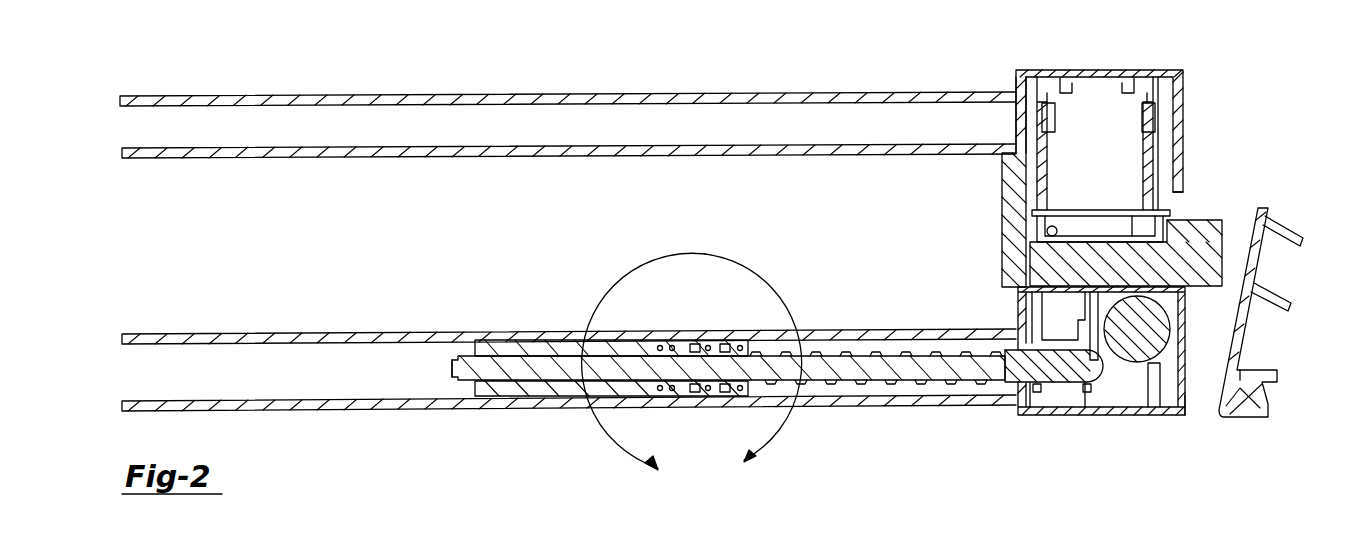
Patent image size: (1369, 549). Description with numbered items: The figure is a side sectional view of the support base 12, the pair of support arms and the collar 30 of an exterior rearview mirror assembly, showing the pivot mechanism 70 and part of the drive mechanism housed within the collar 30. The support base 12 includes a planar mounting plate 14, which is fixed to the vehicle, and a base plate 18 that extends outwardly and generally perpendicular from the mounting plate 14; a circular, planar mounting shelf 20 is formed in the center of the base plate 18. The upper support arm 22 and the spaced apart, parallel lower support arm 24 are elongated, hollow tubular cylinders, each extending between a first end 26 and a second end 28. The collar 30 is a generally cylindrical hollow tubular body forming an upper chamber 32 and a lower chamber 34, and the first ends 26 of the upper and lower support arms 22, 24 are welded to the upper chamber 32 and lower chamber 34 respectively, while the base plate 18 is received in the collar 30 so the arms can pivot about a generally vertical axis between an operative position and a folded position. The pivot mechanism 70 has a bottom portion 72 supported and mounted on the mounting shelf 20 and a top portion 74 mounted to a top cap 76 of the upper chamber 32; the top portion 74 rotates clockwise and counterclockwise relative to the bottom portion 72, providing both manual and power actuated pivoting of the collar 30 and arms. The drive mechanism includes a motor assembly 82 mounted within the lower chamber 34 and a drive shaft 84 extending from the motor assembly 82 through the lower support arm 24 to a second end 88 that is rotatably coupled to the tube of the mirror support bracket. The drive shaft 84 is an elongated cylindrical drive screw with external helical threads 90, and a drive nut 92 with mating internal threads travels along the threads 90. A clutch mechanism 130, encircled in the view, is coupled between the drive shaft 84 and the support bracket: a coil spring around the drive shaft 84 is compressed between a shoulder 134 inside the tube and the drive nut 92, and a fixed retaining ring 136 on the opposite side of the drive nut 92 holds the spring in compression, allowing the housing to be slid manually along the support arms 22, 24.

The support base 12 is at (1291, 295).
The mounting plate 14 is at (1243, 330).
The base plate 18 is at (1200, 220).
The mounting shelf 20 is at (1048, 230).
The upper support arm 22 is at (600, 93).
The lower support arm 24 is at (270, 333).
The first end 26 is at (1002, 163).
The second end 28 is at (118, 98).
The collar 30 is at (1097, 169).
The upper chamber 32 is at (1185, 146).
The lower chamber 34 is at (1185, 395).
The pivot mechanism 70 is at (1157, 124).
The bottom portion 72 is at (1125, 214).
The top portion 74 is at (1064, 80).
The top cap 76 is at (1122, 70).
The motor assembly 82 is at (1098, 418).
The drive shaft 84 is at (691, 412).
The second end 88 is at (455, 374).
The external helical threads 90 is at (888, 386).
The drive nut 92 is at (713, 338).
The clutch mechanism 130 is at (577, 307).
The shoulder 134 is at (664, 396).
The retaining ring 136 is at (654, 332).